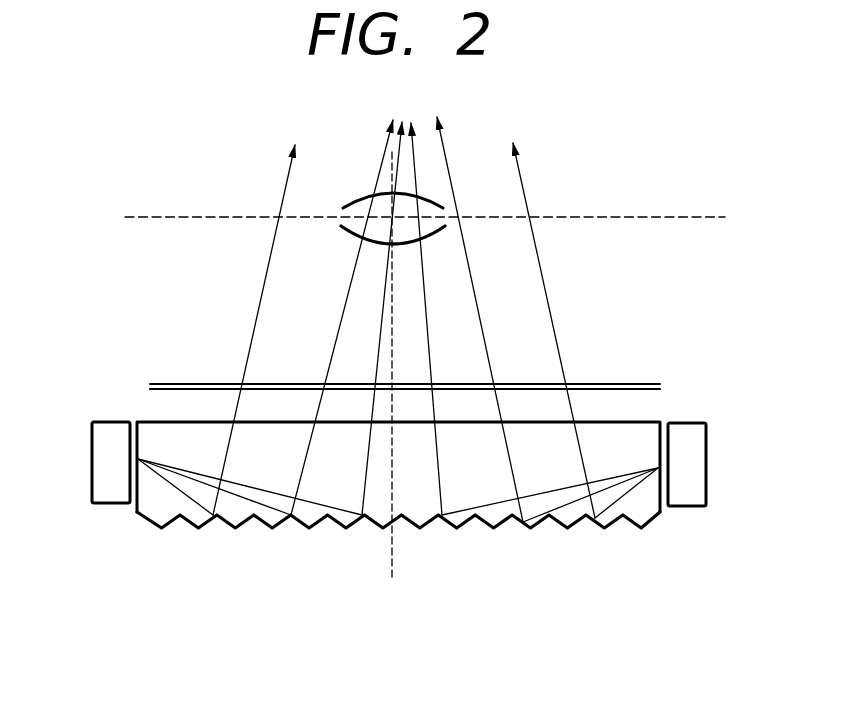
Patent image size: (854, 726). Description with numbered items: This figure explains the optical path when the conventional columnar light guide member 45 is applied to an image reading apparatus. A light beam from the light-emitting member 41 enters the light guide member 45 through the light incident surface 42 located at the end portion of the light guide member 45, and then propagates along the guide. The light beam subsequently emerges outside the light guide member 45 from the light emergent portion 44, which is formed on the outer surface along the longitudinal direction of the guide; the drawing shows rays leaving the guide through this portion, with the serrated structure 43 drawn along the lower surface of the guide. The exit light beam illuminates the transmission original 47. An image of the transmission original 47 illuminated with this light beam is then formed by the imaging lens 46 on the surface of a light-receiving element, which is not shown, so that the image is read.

The light-emitting member 41 is at (110, 422).
The light incident surface 42 is at (137, 481).
The prism 43 is at (549, 532).
The light emergent portion 44 is at (605, 422).
The columnar light guide member 45 is at (339, 559).
The imaging lens 46 is at (445, 233).
The transmission original 47 is at (170, 383).